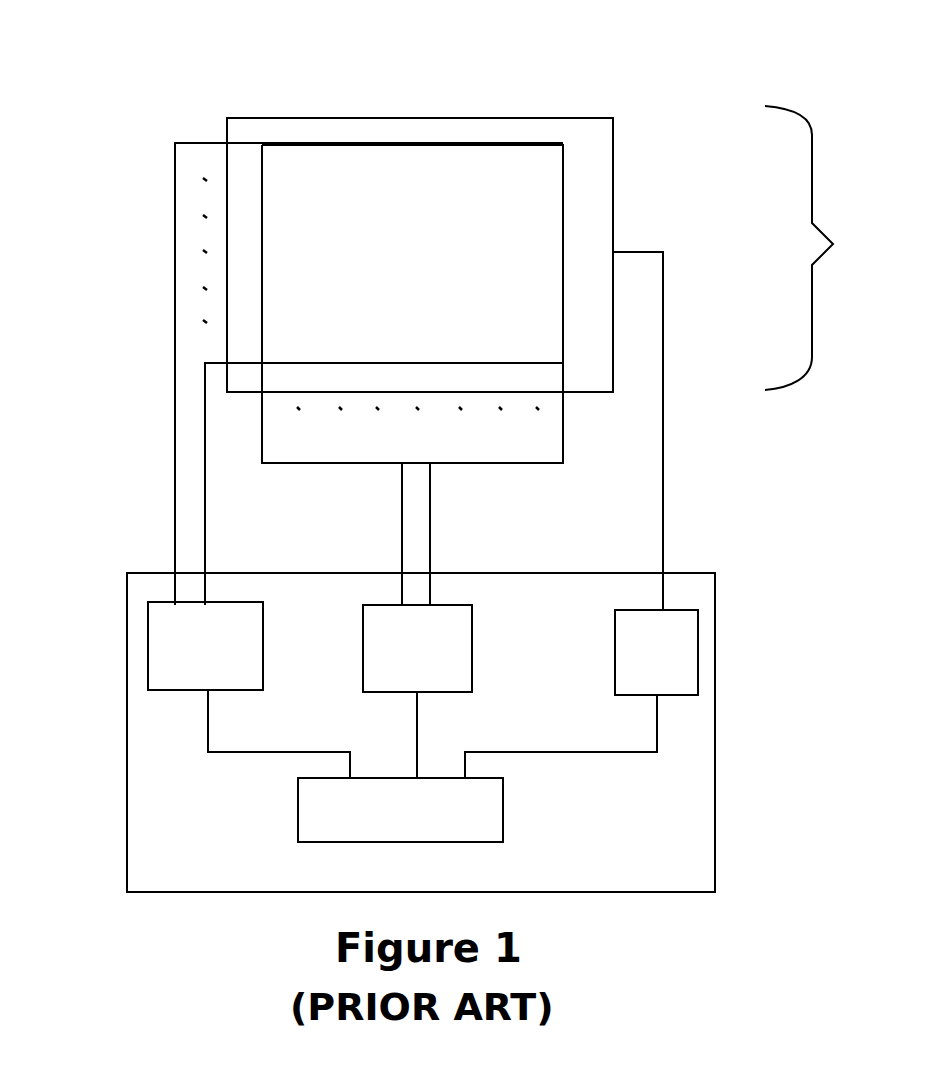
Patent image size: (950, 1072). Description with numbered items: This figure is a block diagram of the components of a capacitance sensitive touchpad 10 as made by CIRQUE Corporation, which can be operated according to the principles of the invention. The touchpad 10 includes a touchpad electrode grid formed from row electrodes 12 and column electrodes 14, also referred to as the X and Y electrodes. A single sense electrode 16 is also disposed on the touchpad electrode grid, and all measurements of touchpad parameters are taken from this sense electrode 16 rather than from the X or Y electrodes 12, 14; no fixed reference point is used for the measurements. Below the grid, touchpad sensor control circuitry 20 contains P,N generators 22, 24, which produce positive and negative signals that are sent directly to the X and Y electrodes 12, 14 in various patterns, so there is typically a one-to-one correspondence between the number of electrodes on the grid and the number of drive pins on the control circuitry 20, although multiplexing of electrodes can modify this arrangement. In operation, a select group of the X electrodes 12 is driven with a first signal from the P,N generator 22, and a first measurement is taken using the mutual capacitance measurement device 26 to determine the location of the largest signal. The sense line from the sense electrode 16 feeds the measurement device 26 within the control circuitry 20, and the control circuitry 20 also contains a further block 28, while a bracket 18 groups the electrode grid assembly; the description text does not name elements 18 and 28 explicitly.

The capacitance sensitive touchpad 10 is at (557, 107).
The row electrodes 12 is at (197, 357).
The column electrodes 14 is at (573, 488).
The sense electrode 16 is at (673, 281).
The touch sensor 18 is at (819, 248).
The touchpad sensor control circuitry 20 is at (715, 760).
The P,N generator 22 is at (148, 645).
The P,N generator 24 is at (477, 637).
The mutual capacitance measurement device 26 is at (615, 657).
The processor 28 is at (503, 813).